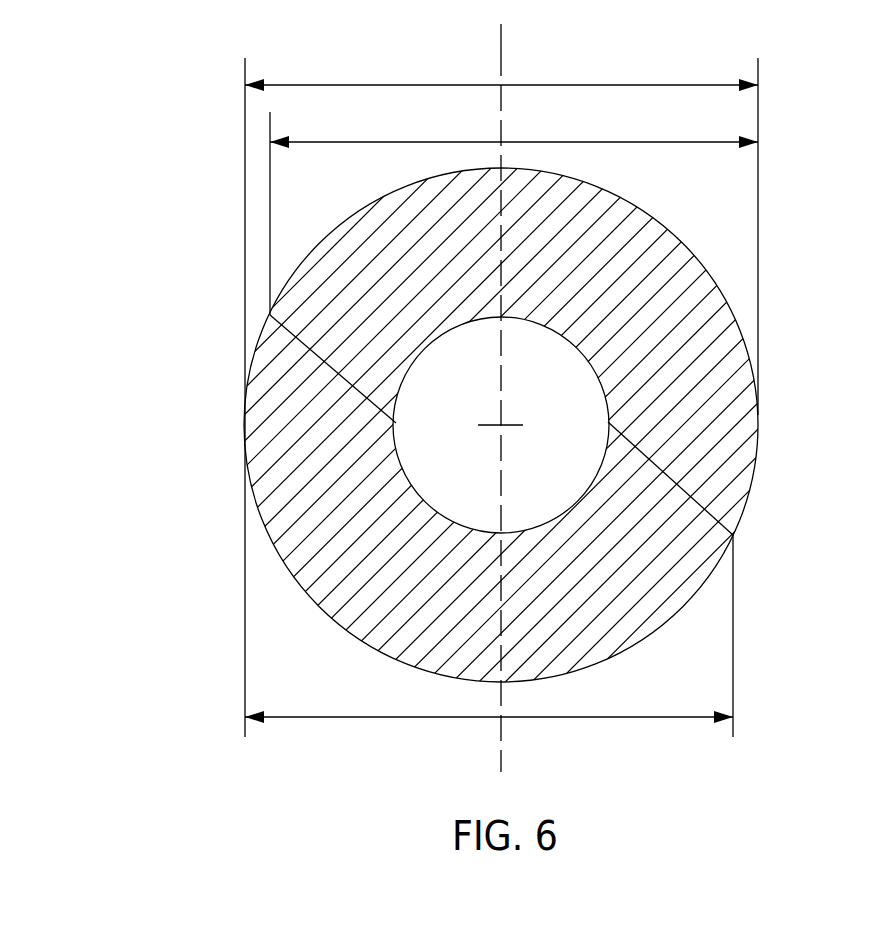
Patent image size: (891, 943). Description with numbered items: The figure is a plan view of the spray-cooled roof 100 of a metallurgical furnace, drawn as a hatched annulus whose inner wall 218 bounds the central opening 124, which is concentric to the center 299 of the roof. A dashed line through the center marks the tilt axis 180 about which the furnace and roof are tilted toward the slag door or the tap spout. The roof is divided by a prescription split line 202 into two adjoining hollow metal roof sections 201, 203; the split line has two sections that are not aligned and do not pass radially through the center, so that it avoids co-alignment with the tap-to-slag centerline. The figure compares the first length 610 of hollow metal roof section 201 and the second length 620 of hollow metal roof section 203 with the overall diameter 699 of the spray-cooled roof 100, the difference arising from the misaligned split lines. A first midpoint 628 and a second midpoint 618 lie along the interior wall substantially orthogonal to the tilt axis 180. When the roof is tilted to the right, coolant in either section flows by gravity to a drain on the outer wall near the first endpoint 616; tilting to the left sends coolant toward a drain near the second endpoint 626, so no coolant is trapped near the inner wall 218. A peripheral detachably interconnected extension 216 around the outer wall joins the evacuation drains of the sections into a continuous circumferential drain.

The spray-cooled roof 100 is at (790, 393).
The tilt axis 180 is at (500, 49).
The diameter 699 is at (580, 85).
The second length 620 is at (405, 142).
The first length 610 is at (598, 717).
The prescription split line 202 is at (303, 347).
The interconnected extension 216 is at (668, 228).
The inner wall 218 is at (540, 318).
The central opening 124 is at (501, 425).
The center 299 is at (498, 425).
The second endpoint 626 is at (270, 315).
The first endpoint 616 is at (733, 535).
The first midpoint 628 is at (393, 425).
The second midpoint 618 is at (609, 425).
The hollow metal roof section 203 is at (670, 411).
The hollow metal roof section 201 is at (336, 445).